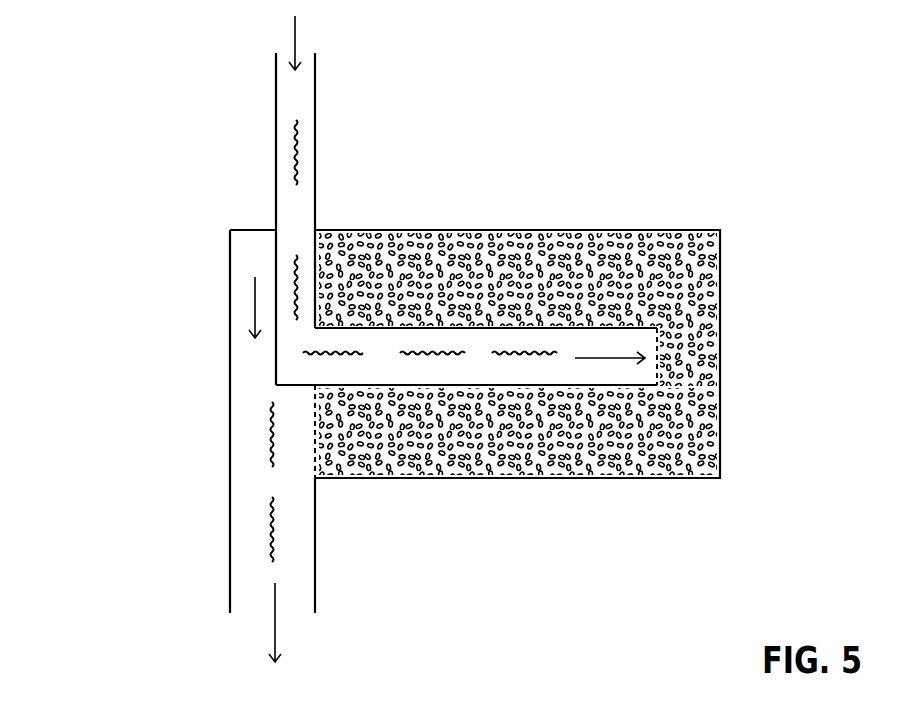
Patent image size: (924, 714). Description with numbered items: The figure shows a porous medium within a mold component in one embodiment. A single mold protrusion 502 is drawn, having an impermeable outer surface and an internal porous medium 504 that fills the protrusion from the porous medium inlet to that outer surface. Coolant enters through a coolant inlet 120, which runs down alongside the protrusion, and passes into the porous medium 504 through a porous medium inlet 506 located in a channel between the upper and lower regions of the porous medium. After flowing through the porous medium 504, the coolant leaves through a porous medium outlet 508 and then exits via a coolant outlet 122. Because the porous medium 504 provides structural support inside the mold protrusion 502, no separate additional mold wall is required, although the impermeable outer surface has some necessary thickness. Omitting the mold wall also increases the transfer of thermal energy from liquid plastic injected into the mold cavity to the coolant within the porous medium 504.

The coolant inlet 120 is at (317, 84).
The coolant outlet 122 is at (317, 607).
The mold protrusion 502 is at (722, 229).
The porous medium 504 is at (448, 241).
The porous medium inlet 506 is at (561, 361).
The porous medium outlet 508 is at (256, 408).